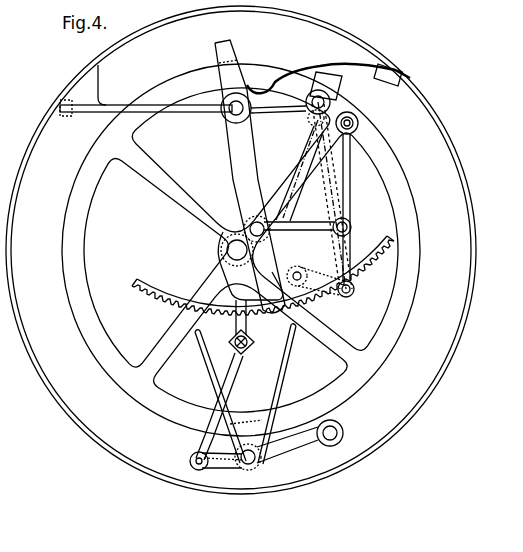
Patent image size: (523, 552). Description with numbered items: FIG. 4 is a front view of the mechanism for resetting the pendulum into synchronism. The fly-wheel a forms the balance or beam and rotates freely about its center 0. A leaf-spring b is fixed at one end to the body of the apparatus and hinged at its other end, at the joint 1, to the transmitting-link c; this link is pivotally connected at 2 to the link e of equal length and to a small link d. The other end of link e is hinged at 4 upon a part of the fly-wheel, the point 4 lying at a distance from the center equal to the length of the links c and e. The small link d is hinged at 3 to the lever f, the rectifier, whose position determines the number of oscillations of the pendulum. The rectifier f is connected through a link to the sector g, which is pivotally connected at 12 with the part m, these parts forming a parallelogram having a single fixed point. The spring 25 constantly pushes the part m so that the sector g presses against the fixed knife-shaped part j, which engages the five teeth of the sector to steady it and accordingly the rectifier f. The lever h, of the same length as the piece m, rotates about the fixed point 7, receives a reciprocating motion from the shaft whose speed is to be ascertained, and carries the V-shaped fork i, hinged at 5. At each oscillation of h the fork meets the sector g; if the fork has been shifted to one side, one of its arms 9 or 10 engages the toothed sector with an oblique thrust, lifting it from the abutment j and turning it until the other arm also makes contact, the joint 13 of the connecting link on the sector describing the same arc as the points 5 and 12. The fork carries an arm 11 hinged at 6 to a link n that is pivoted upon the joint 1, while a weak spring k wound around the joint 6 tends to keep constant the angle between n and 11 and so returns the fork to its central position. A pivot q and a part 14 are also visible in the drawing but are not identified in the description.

The fly-wheel a is at (241, 250).
The center of the fly-wheel 0 is at (239, 266).
The leaf-spring b is at (155, 105).
The pivot of sector and part m 12 is at (228, 114).
The sector g is at (238, 152).
The part m is at (262, 111).
The spring 25 is at (328, 62).
The pivot q is at (331, 99).
The joint of spring and link c 1 is at (312, 124).
The hinge of link e on fly-wheel 4 is at (360, 119).
The link c is at (331, 175).
The link e is at (345, 197).
The rectifier lever f is at (348, 199).
The bar 14 is at (299, 213).
The joint of link on sector 13 is at (243, 219).
The pivot joint 2 is at (355, 289).
The small link d is at (335, 290).
The hinge of small link on rectifier 3 is at (263, 275).
The link n is at (236, 382).
The knife-shaped fixed part j is at (249, 343).
The fork arm 10 is at (203, 372).
The fork arm 9 is at (290, 358).
The fork i is at (263, 421).
The fork pivot 5 is at (262, 466).
The lever h is at (297, 448).
The fixed pivot of lever h 7 is at (341, 428).
The weak spring k is at (196, 448).
The joint of arm 11 and link n 6 is at (189, 465).
The arm of the fork 11 is at (221, 470).